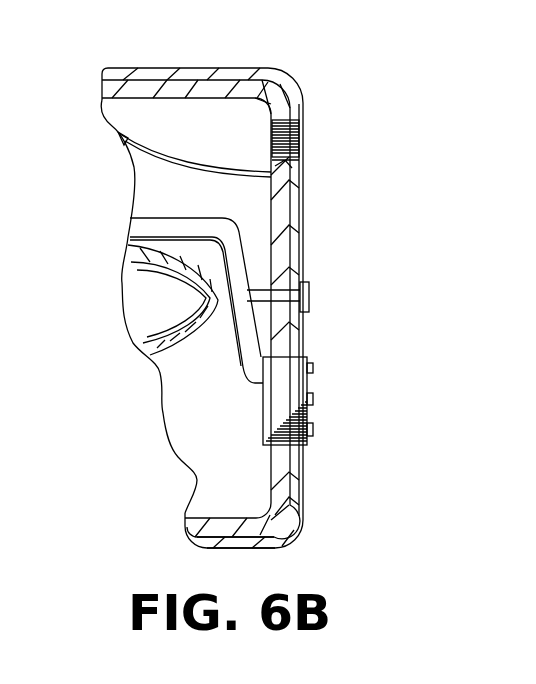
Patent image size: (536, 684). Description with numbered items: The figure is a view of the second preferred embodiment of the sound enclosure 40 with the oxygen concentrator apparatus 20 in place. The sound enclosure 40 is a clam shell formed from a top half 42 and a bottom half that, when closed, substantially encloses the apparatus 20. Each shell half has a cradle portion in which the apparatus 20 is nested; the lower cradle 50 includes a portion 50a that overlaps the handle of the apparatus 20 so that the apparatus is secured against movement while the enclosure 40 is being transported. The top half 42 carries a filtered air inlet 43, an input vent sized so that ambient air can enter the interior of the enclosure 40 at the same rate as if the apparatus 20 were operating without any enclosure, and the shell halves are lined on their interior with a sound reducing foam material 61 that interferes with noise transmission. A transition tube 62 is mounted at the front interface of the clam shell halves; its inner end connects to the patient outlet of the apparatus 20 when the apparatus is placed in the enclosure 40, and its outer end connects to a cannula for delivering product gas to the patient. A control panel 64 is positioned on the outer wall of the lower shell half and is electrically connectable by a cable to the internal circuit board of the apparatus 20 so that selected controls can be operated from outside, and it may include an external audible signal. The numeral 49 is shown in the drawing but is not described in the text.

The sound enclosure 40 is at (311, 81).
The top half 42 is at (229, 72).
The sound reducing foam material 61 is at (147, 90).
The bottom wall 49 is at (282, 541).
The filtered air inlet 43 is at (303, 140).
The overlapping portion of lower cradle 50a is at (135, 250).
The lower cradle 50 is at (193, 347).
The apparatus 20 is at (166, 313).
The transition tube 62 is at (260, 293).
The control panel 64 is at (293, 383).